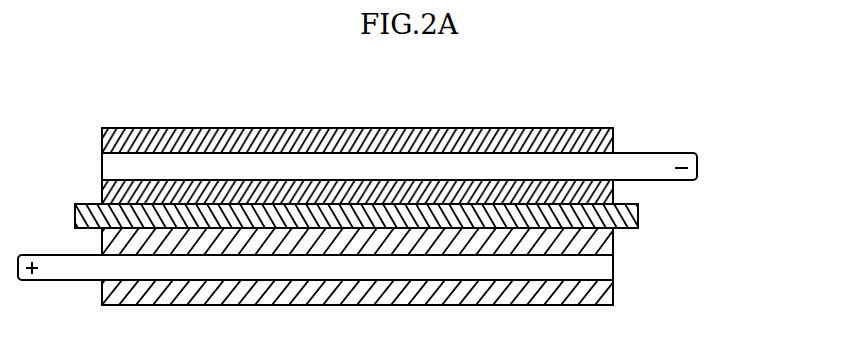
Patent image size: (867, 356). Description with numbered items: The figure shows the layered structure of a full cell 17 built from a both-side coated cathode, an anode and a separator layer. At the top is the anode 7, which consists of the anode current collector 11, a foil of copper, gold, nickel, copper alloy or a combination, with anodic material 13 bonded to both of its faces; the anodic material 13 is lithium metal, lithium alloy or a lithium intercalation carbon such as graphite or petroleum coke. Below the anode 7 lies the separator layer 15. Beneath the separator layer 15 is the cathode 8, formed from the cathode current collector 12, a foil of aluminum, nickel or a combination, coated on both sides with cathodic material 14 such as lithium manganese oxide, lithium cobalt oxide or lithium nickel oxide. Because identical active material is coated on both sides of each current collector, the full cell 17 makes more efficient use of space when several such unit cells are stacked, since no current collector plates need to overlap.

The anode 7 is at (758, 124).
The cathode 8 is at (687, 233).
The anode current collector 11 is at (697, 172).
The cathode current collector 12 is at (598, 268).
The anodic material 13 is at (613, 138).
The cathodic material 14 is at (598, 240).
The separator layer 15 is at (75, 215).
The full cell 17 is at (748, 242).